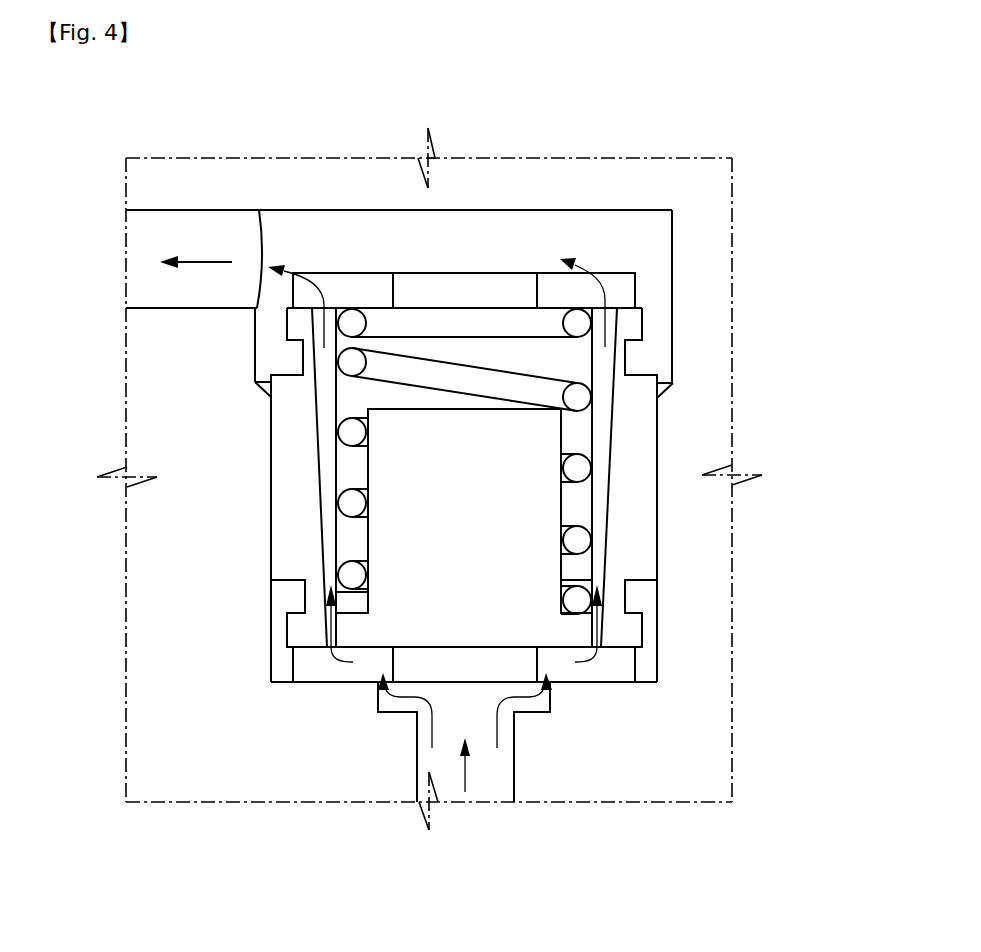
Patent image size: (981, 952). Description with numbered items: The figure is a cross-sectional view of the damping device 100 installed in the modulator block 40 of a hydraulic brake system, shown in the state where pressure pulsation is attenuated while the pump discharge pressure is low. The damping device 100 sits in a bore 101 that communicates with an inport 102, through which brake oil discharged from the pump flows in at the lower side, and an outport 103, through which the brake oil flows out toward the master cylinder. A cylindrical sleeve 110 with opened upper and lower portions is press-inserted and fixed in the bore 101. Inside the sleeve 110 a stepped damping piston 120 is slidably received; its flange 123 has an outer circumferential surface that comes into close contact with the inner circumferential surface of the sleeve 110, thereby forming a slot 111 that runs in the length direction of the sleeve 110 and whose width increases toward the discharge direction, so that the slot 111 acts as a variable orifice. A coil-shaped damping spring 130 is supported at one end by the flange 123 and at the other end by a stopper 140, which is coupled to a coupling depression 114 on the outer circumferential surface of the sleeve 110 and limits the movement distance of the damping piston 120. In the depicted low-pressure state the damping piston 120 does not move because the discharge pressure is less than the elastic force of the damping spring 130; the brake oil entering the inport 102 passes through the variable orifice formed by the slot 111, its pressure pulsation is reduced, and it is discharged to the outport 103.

The modulator block 40 is at (697, 753).
The damping device 100 is at (627, 235).
The bore 101 is at (652, 650).
The inport 102 is at (497, 781).
The outport 103 is at (147, 238).
The sleeve 110 is at (640, 430).
The slot 111 is at (600, 375).
The coupling depression 114 is at (630, 592).
The damping piston 120 is at (387, 548).
The flange 123 is at (570, 633).
The damping spring 130 is at (345, 432).
The stopper 140 is at (482, 266).